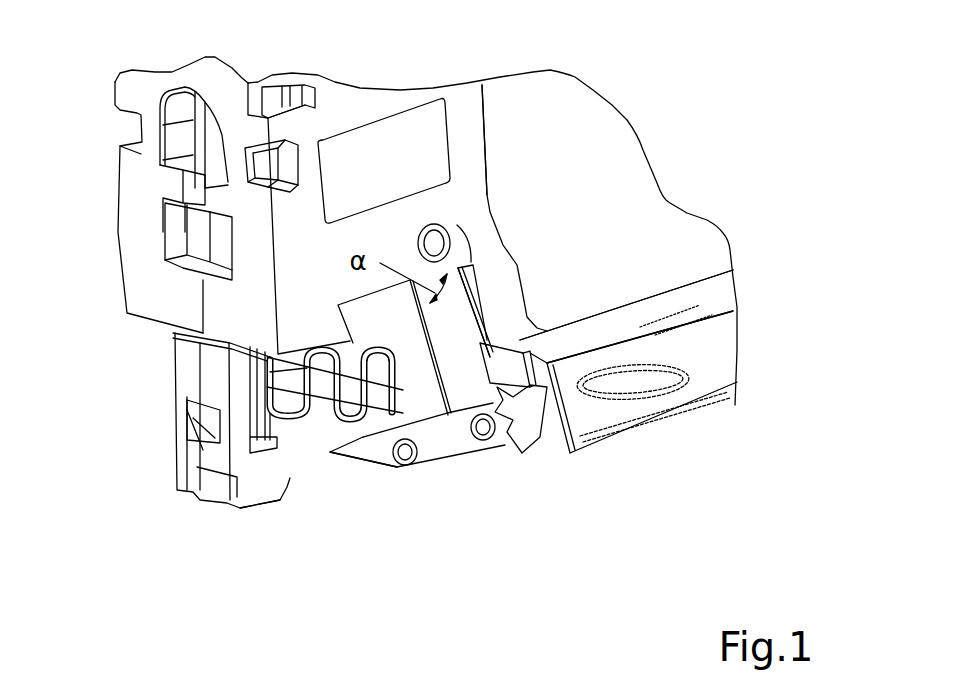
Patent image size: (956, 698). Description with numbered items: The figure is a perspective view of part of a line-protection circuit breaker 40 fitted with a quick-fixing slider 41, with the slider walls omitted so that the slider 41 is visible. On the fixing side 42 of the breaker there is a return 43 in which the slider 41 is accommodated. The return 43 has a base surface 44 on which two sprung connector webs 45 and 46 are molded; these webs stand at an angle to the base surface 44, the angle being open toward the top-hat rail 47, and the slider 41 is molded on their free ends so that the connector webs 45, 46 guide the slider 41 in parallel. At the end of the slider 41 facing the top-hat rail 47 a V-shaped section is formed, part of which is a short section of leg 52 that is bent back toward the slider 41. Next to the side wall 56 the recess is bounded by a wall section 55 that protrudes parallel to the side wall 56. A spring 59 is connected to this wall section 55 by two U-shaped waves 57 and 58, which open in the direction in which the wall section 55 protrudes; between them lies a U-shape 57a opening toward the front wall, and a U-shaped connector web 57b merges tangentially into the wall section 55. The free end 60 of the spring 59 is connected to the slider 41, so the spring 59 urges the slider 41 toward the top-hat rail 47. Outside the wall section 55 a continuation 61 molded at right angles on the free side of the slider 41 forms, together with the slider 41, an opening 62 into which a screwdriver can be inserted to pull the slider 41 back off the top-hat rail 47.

The line-protection circuit breaker 40 is at (596, 150).
The slider 41 is at (443, 437).
The fixing side 42 is at (617, 343).
The return 43 is at (476, 260).
The base surface 44 is at (418, 290).
The connector web 45 is at (440, 357).
The connector web 46 is at (520, 340).
The top-hat rail 47 is at (647, 420).
The short section of leg 52 is at (515, 691).
The wall section 55 is at (267, 424).
The side wall 56 is at (137, 100).
The U-shaped wave 57 is at (320, 360).
The U-shape 57a is at (357, 442).
The connector web 57b is at (290, 407).
The U-shaped wave 58 is at (377, 368).
The spring 59 is at (357, 418).
The free end 60 is at (420, 455).
The continuation 61 is at (252, 488).
The opening 62 is at (203, 450).